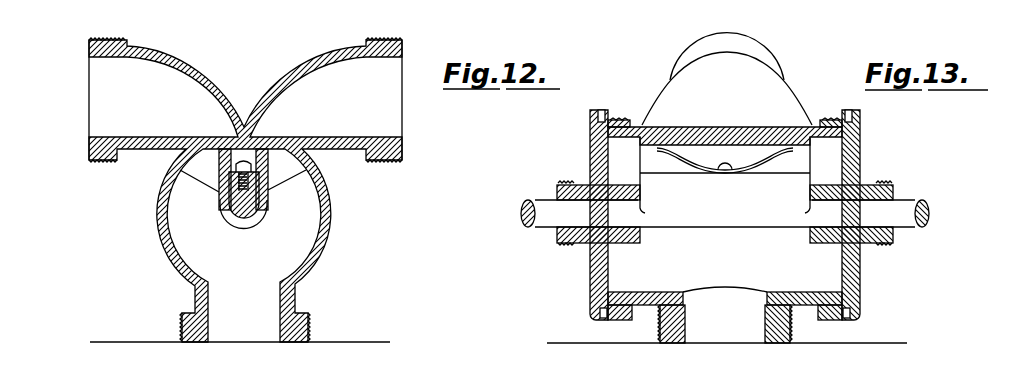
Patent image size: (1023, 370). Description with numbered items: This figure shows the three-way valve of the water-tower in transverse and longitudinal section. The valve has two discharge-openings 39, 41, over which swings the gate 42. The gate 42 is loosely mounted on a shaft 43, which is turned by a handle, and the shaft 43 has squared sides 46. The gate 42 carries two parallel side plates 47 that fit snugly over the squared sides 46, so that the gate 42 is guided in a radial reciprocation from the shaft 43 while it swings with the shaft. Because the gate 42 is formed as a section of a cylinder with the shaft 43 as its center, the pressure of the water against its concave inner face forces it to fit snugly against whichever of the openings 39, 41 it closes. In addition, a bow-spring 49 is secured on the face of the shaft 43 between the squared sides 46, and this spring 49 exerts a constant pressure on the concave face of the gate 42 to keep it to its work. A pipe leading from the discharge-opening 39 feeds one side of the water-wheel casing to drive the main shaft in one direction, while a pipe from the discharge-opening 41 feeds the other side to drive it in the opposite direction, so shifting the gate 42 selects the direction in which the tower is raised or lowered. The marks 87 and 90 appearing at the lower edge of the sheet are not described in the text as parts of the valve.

In FIG. 12, the discharge-opening 39 is at (90, 107).
In FIG. 12, the discharge-opening 41 is at (402, 107).
In FIG. 12, the gate 42 is at (285, 172).
In FIG. 13, the gate 42 is at (694, 132).
In FIG. 13, the shaft 43 is at (533, 203).
In FIG. 12, the squared sides 46 is at (228, 212).
In FIG. 13, the squared sides 46 is at (725, 175).
In FIG. 12, the side plates 47 is at (222, 192).
In FIG. 12, the bow-spring 49 is at (241, 163).
In FIG. 13, the bow-spring 49 is at (688, 160).
In FIG. 13, the sheet marking 87 is at (826, 359).
In FIG. 13, the sheet marking 90 is at (858, 360).